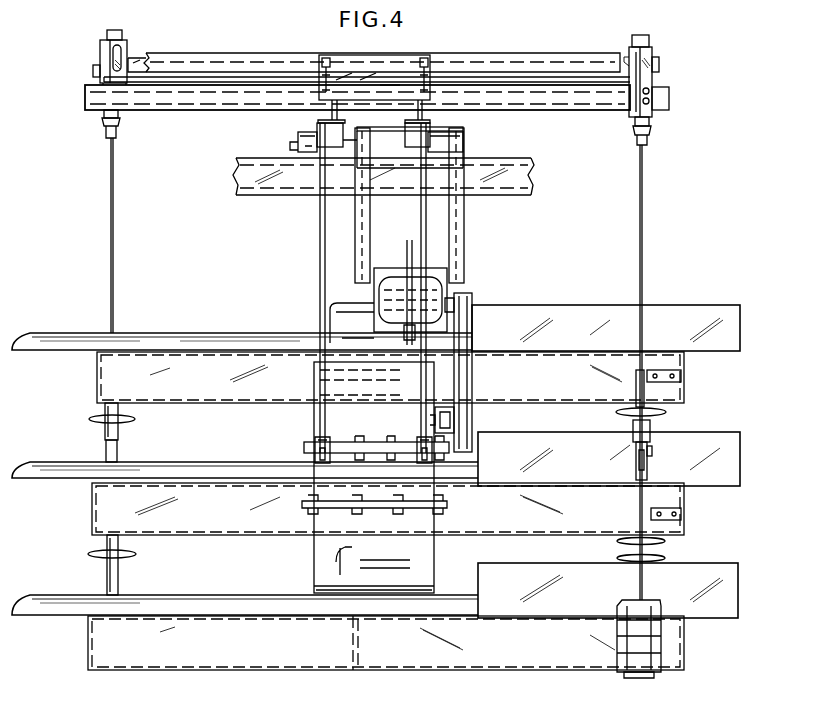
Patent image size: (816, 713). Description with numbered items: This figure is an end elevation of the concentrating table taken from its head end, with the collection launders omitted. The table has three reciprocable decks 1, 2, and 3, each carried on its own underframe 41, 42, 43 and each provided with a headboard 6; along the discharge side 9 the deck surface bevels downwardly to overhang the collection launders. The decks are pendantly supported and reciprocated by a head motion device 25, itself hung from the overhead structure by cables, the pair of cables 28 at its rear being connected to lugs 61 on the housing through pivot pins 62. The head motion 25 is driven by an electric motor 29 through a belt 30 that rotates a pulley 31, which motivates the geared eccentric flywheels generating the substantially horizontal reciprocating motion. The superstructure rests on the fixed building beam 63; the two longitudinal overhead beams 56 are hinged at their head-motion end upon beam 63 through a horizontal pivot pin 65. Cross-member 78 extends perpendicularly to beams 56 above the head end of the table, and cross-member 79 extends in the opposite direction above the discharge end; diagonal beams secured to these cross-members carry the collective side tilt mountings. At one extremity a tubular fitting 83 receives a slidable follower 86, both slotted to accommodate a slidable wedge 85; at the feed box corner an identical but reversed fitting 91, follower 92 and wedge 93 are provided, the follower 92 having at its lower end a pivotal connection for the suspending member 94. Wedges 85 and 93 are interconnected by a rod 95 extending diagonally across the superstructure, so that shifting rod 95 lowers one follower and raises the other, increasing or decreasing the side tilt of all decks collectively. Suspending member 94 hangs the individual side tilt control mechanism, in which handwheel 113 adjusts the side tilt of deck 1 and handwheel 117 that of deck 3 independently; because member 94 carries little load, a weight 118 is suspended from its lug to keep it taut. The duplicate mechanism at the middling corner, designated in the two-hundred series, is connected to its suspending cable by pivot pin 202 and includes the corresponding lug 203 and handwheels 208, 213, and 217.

The deck 1 is at (177, 330).
The deck 2 is at (175, 459).
The deck 3 is at (173, 592).
The headboard 6 is at (566, 308).
The discharge side 9 is at (240, 333).
The head motion device 25 is at (380, 555).
The cables 28 is at (320, 262).
The electric motor 29 is at (452, 294).
The belt 30 is at (473, 381).
The pulley 31 is at (474, 421).
The underframe 41 is at (97, 378).
The underframe 42 is at (92, 510).
The underframe 43 is at (88, 638).
The longitudinal overhead beams 56 is at (319, 98).
The lugs 61 is at (330, 458).
The pivot pins 62 is at (313, 456).
The fixed beam 63 is at (251, 190).
The horizontal pivot pin 65 is at (350, 140).
The cross-member 78 is at (566, 74).
The cross-member 79 is at (203, 100).
The tubular fitting 83 is at (100, 50).
The slidable wedge 85 is at (125, 60).
The follower 86 is at (120, 121).
The fitting 91 is at (652, 54).
The follower 92 is at (651, 122).
The wedge 93 is at (660, 78).
The suspending member 94 is at (645, 241).
The rod 95 is at (212, 78).
The handwheel 113 is at (89, 419).
The handwheel 117 is at (88, 555).
The weight 118 is at (642, 678).
The pivot pin 202 is at (633, 450).
The lug 203 is at (652, 448).
The handwheel 208 is at (666, 541).
The handwheel 213 is at (667, 413).
The handwheel 217 is at (655, 561).